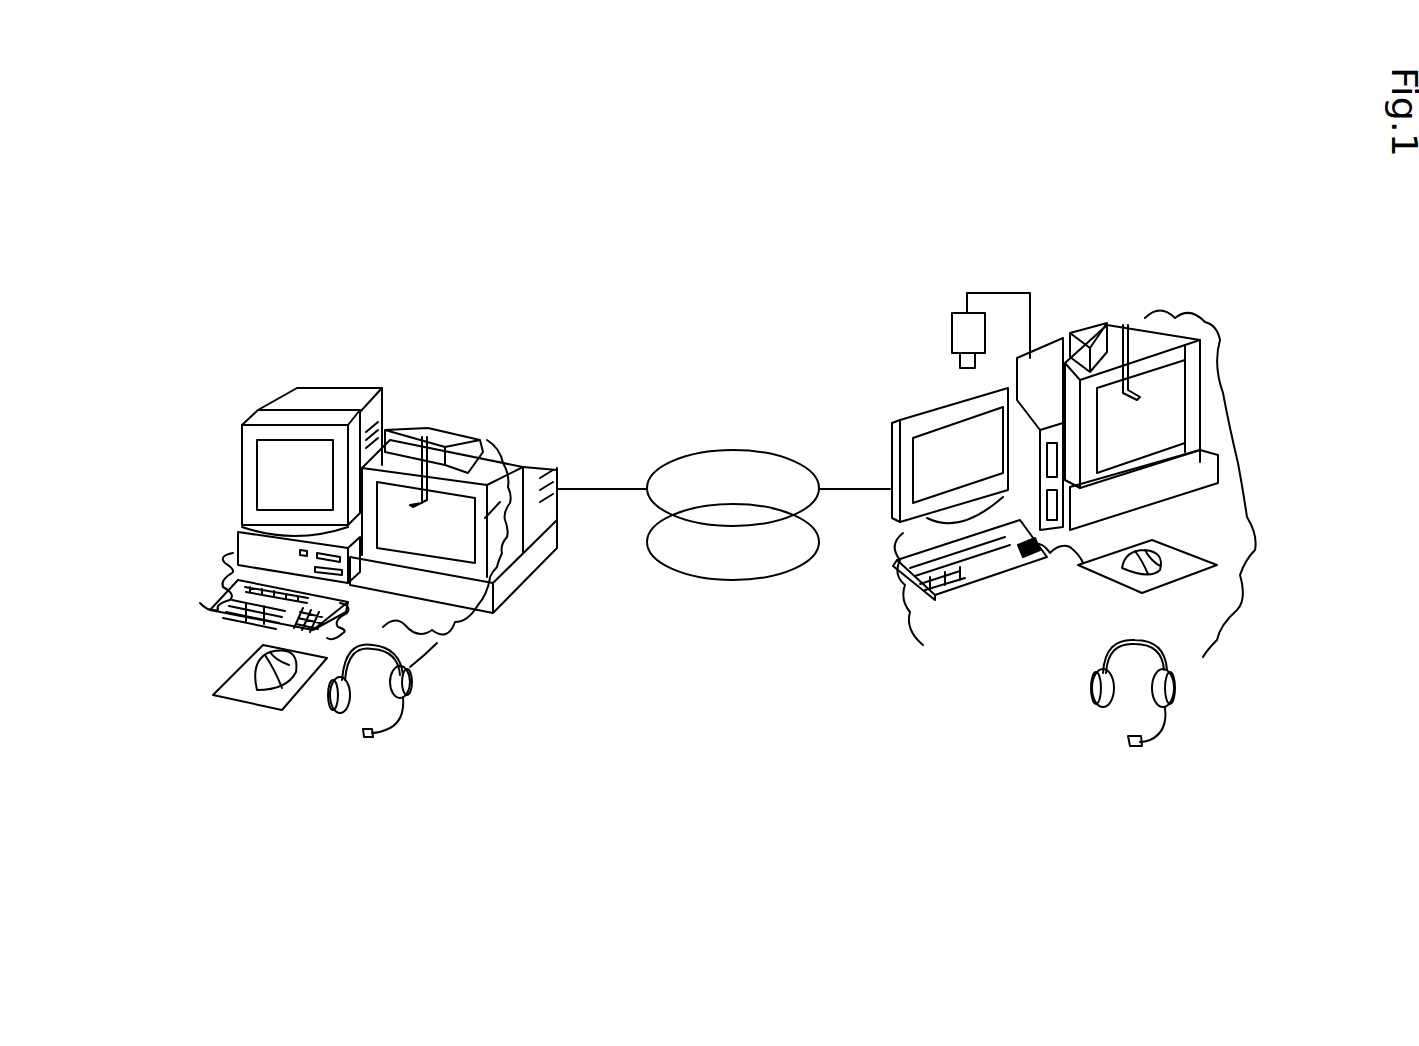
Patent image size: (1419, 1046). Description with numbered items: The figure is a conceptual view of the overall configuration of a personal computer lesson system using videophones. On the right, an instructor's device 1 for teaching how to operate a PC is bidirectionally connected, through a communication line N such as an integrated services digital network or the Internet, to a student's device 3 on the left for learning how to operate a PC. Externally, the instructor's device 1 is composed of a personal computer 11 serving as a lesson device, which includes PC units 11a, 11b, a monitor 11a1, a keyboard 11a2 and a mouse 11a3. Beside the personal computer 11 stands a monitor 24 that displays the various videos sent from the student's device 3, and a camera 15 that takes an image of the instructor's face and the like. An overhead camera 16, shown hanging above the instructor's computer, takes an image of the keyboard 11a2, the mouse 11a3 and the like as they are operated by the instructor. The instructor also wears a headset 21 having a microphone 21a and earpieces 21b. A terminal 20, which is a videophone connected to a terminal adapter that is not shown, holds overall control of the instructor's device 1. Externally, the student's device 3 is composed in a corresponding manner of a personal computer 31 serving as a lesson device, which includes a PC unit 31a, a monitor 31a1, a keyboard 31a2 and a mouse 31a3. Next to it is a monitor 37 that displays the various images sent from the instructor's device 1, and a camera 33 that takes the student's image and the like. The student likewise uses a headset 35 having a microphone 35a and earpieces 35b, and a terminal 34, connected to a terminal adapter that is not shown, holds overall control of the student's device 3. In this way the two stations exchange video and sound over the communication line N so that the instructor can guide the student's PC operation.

The instructor's device 1 is at (1066, 209).
The student's device 3 is at (392, 251).
The communication line N is at (733, 450).
The personal computer 11 is at (878, 439).
The PC unit 11a is at (1038, 415).
The monitor 11a1 is at (933, 425).
The keyboard 11a2 is at (905, 583).
The mouse 11a3 is at (1090, 575).
The PC unit 11b is at (1210, 472).
The camera 15 is at (1140, 402).
The overhead camera 16 is at (952, 333).
The terminal 20 is at (1140, 315).
The headset 21 is at (1110, 652).
The microphone 21a is at (1138, 745).
The earpieces 21b is at (1100, 690).
The monitor 24 is at (1205, 405).
The personal computer 31 is at (227, 426).
The PC unit 31a is at (247, 547).
The monitor 31a1 is at (273, 433).
The keyboard 31a2 is at (217, 602).
The mouse 31a3 is at (253, 673).
The camera 33 is at (458, 443).
The terminal 34 is at (490, 438).
The headset 35 is at (371, 655).
The microphone 35a is at (371, 738).
The earpieces 35b is at (332, 698).
The monitor 37 is at (525, 460).